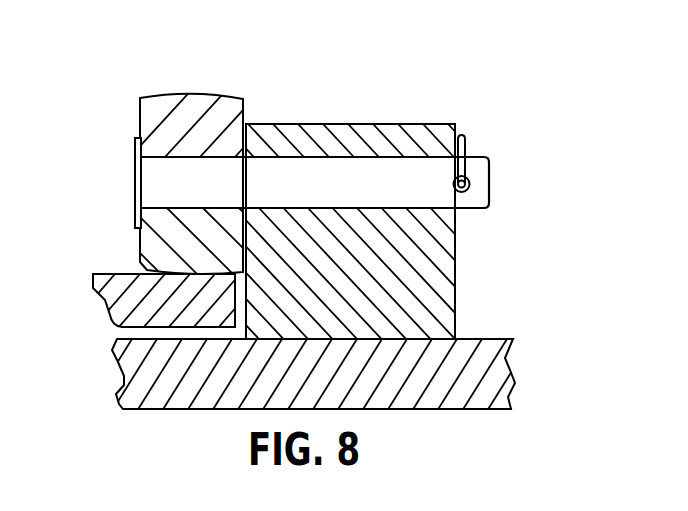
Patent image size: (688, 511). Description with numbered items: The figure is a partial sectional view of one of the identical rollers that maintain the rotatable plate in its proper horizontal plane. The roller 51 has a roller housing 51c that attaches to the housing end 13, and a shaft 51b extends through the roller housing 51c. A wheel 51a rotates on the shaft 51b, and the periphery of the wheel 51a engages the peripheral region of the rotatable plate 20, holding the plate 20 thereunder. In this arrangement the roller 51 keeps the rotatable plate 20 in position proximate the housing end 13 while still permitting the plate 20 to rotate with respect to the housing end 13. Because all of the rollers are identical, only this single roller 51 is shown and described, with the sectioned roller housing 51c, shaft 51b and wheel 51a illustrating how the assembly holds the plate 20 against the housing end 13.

The roller 51 is at (336, 175).
The wheel 51a is at (198, 108).
The shaft 51b is at (484, 167).
The roller housing 51c is at (447, 266).
The rotatable plate 20 is at (118, 285).
The housing end 13 is at (503, 380).